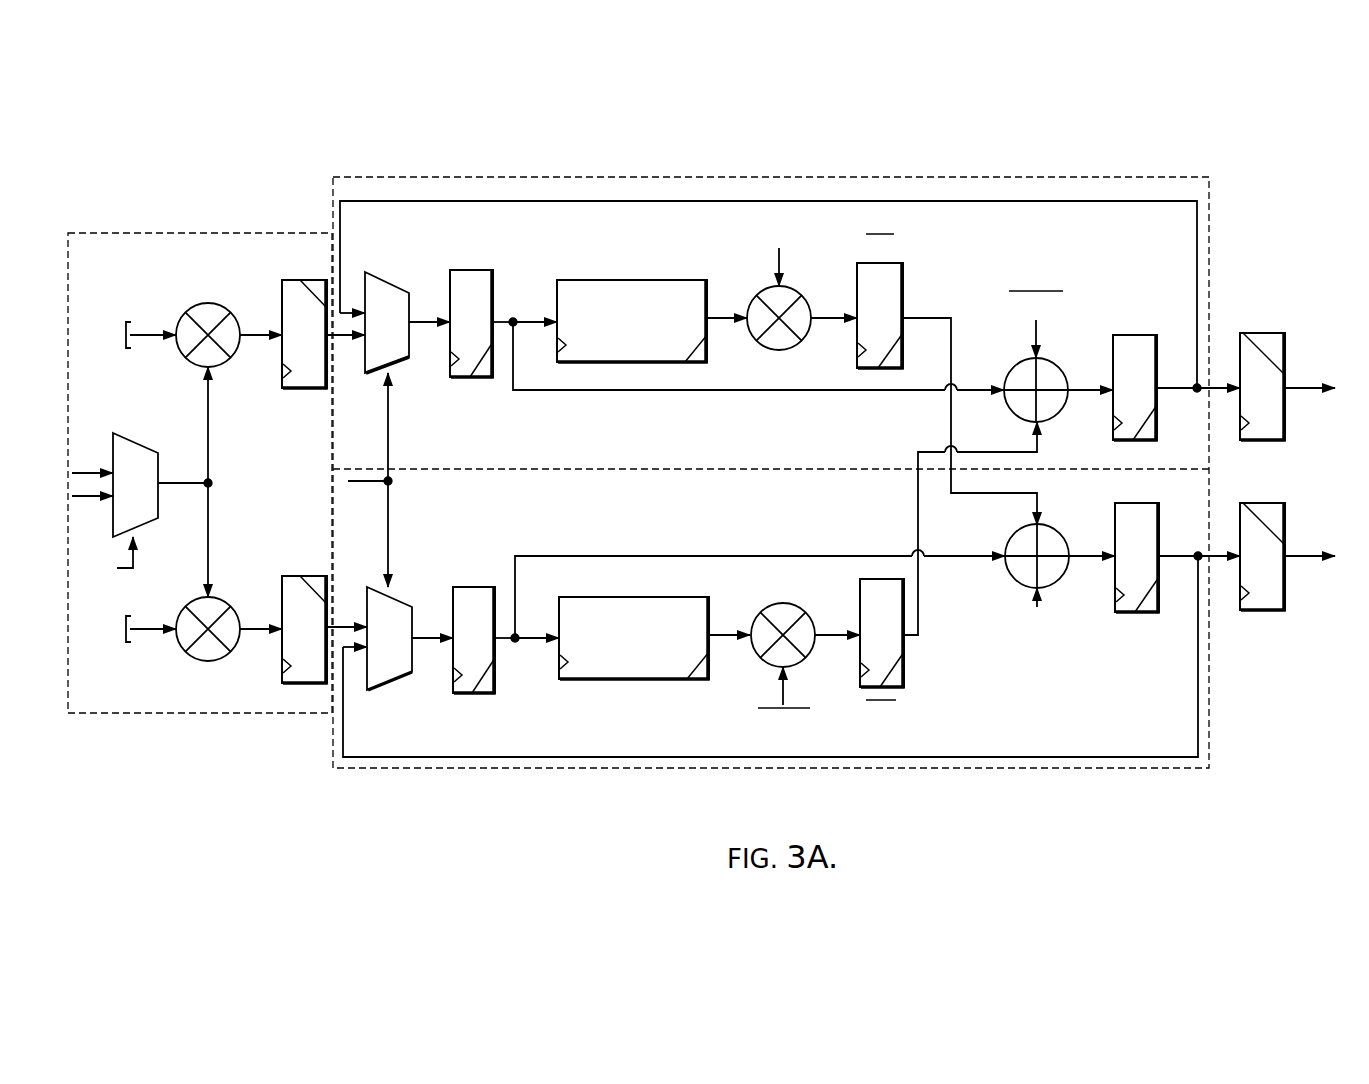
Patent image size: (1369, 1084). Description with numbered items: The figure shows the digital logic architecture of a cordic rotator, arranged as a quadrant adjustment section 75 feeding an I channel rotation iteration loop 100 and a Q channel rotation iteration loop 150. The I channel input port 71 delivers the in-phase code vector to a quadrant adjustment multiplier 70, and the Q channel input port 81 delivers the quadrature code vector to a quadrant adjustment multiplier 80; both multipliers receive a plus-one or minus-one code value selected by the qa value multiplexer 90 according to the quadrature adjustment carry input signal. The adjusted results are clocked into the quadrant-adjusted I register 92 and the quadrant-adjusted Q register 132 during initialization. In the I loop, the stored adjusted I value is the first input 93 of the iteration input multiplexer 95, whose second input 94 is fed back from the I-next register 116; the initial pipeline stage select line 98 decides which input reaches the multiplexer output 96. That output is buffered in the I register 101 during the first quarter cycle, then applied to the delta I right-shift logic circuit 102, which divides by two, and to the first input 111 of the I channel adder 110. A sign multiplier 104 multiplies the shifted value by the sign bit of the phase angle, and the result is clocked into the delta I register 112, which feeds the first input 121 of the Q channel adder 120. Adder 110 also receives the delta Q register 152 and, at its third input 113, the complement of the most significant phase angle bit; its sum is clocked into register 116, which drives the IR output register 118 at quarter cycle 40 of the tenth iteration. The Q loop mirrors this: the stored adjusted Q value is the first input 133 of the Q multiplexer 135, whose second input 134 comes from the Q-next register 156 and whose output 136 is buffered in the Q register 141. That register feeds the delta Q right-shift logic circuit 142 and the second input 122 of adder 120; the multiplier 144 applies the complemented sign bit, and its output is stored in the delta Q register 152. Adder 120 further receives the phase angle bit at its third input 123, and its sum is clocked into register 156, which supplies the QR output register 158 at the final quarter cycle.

The quadrant adjustment section 75 is at (207, 233).
The I channel rotation iteration loop 100 is at (690, 177).
The Q channel rotation iteration loop 150 is at (1165, 770).
The quadrant adjustment multiplier 70 is at (222, 305).
The I channel input port 71 is at (133, 333).
The qa value multiplexer 90 is at (138, 435).
The IPqa register 92 is at (305, 390).
The quadrant adjustment multiplier 80 is at (226, 603).
The Q channel input port 81 is at (140, 632).
The QPqa register 132 is at (282, 650).
The first input of iteration input multiplexer 93 is at (366, 340).
The second input of iteration input multiplexer 94 is at (365, 313).
The iteration input multiplexer 95 is at (385, 292).
The multiplexer output 96 is at (410, 322).
The initial pipeline stage p(0) select line 98 is at (390, 492).
The I register 101 is at (462, 378).
The delta I right-shift logic circuit 102 is at (578, 280).
The sign multiplier 104 is at (775, 350).
The delta I register 112 is at (900, 275).
The I channel adder 110 is at (1046, 362).
The first input of adder 110 111 is at (1008, 398).
The third input of adder 110 113 is at (1030, 362).
The I-next (In) register 116 is at (1150, 335).
The IR output register 118 is at (1245, 333).
The quarter cycle forty 40 is at (1304, 471).
The first input of Q multiplexer 133 is at (364, 627).
The second input of Q multiplexer 134 is at (367, 652).
The Q multiplexer 135 is at (390, 598).
The Q multiplexer output 136 is at (413, 642).
The Q register 141 is at (485, 587).
The delta Q right-shift logic circuit 142 is at (632, 597).
The multiplier 144 is at (782, 603).
The delta Q register 152 is at (905, 650).
The Q channel adder 120 is at (1010, 576).
The first input of adder 120 121 is at (1043, 527).
The second input of adder 120 122 is at (1006, 542).
The third input of adder 120 123 is at (1046, 592).
The Q-next (Qn) register 156 is at (1126, 612).
The QR output register 158 is at (1255, 612).